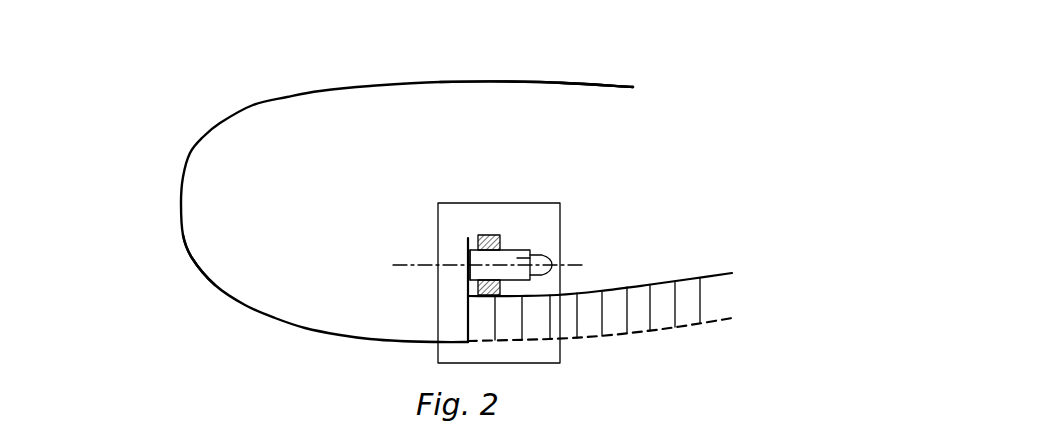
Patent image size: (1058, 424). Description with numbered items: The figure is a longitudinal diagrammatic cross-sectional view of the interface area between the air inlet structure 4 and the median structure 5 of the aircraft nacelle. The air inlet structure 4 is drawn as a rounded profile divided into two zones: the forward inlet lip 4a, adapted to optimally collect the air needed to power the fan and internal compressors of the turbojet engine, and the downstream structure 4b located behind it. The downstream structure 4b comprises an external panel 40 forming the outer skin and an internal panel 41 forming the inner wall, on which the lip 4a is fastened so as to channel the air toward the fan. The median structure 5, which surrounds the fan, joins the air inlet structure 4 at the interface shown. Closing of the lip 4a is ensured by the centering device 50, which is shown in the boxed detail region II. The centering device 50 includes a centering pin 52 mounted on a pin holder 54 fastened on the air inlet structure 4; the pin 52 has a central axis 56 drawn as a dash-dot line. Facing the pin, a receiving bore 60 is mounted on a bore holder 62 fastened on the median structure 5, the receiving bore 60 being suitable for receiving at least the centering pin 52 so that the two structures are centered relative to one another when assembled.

The air inlet structure 4 is at (178, 234).
The inlet lip 4a is at (203, 273).
The downstream structure 4b is at (609, 79).
The external panel 40 is at (528, 82).
The internal panel 41 is at (637, 310).
The median structure 5 is at (712, 300).
The centering device 50 is at (518, 244).
The centering pin 52 is at (519, 258).
The pin holder 54 is at (467, 255).
The central axis 56 is at (403, 267).
The receiving bore 60 is at (486, 235).
The bore holder 62 is at (468, 289).
The detail view boundary II is at (560, 210).